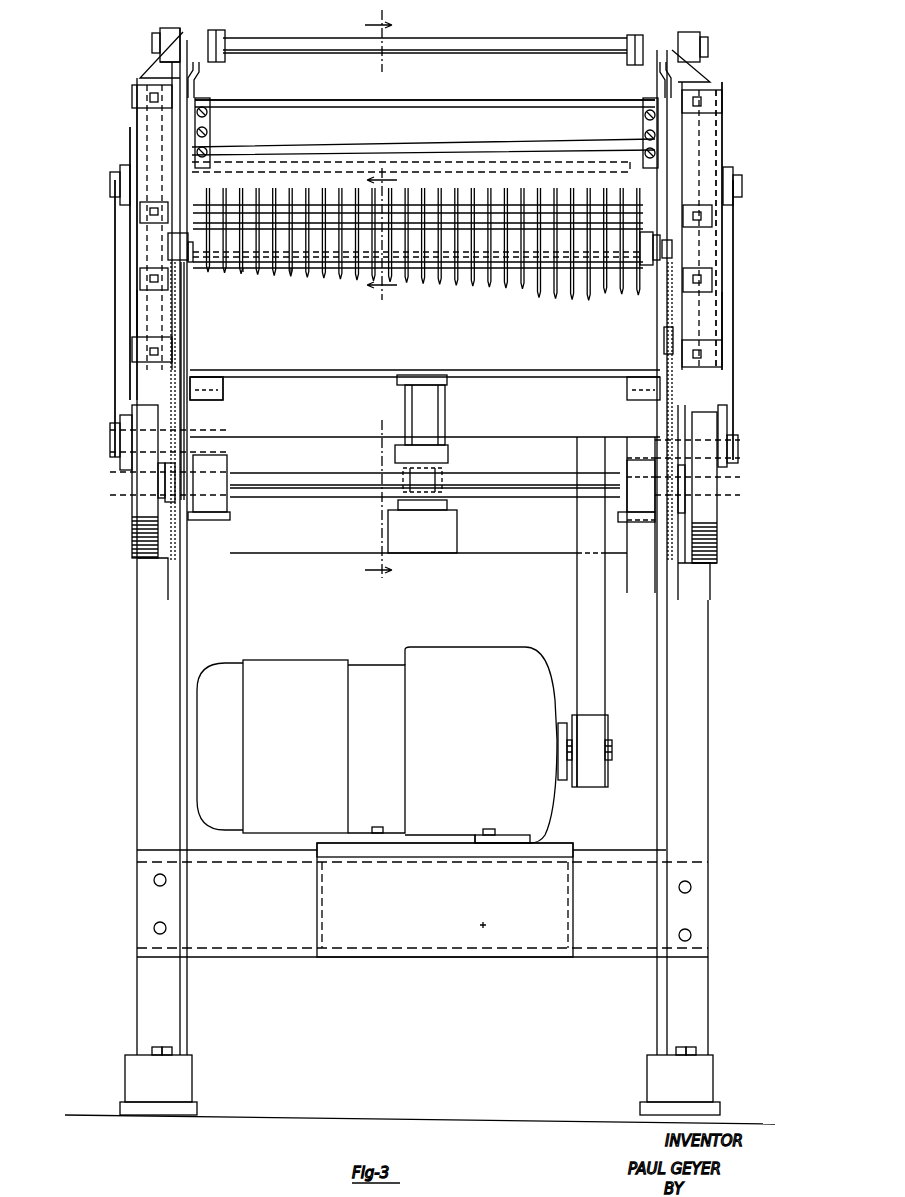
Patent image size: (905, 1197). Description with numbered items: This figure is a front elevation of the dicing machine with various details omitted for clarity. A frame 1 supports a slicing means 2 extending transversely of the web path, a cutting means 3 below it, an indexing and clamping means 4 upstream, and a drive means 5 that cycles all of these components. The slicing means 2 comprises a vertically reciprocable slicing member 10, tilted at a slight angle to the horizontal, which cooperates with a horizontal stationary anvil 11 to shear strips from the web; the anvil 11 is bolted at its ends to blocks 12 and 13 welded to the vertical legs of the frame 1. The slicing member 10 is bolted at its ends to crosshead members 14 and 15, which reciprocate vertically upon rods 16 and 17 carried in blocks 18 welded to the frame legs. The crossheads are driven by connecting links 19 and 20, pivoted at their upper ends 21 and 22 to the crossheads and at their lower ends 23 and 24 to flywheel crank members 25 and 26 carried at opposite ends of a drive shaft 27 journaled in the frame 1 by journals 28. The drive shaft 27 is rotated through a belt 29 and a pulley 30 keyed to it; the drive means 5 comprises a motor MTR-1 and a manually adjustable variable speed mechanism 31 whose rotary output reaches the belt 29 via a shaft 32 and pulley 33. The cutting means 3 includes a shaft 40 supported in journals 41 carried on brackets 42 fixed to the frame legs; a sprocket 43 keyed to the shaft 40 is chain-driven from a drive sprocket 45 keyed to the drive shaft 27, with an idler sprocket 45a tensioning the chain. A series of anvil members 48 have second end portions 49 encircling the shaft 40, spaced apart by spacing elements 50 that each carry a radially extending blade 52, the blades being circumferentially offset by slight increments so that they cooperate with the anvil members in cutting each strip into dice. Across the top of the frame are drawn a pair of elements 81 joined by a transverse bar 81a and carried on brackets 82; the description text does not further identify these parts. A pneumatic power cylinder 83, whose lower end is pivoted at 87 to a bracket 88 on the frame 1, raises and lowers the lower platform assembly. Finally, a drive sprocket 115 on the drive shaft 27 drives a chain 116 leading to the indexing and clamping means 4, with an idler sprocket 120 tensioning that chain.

The frame 1 is at (729, 663).
The slicing means 2 is at (462, 130).
The cutting means 3 is at (418, 249).
The indexing and clamping means 4 is at (387, 295).
The drive means 5 is at (387, 637).
The slicing member 10 is at (400, 152).
The anvil 11 is at (430, 106).
The block 12 is at (208, 116).
The block 13 is at (642, 128).
The crosshead member 14 is at (135, 140).
The crosshead member 15 is at (720, 133).
The rod 16 is at (140, 117).
The rod 17 is at (715, 123).
The blocks 18 is at (722, 360).
The connecting link 19 is at (120, 333).
The connecting link 20 is at (733, 336).
The upper end 21 is at (110, 186).
The upper end 22 is at (742, 188).
The pivot 23 is at (110, 445).
The pivot 24 is at (740, 450).
The flywheel crank member 25 is at (132, 545).
The flywheel crank member 26 is at (717, 543).
The drive shaft 27 is at (312, 484).
The journals 28 is at (628, 462).
The belt 29 is at (603, 648).
The pulley 30 is at (577, 522).
The variable speed mechanism 31 is at (464, 652).
The shaft 32 is at (612, 760).
The pulley 33 is at (608, 722).
The shaft 40 is at (740, 263).
The journals 41 is at (740, 286).
The brackets 42 is at (742, 311).
The sprocket 43 is at (665, 270).
The drive sprocket 45 is at (688, 506).
The idler sprocket 45a is at (664, 352).
The anvil members 48 is at (472, 194).
The second end portion 49 is at (292, 275).
The spacing elements 50 is at (243, 272).
The blades 52 is at (589, 293).
The pulleys 81 is at (627, 38).
The pulley bar 81a is at (470, 44).
The pulley brackets 82 is at (650, 80).
The pneumatic power cylinder 83 is at (445, 405).
The pivot 87 is at (440, 480).
The bracket 88 is at (450, 529).
The drive sprocket 115 is at (160, 503).
The chain 116 is at (185, 440).
The idler sprocket 120 is at (190, 393).
The motor MTR-1 is at (312, 668).